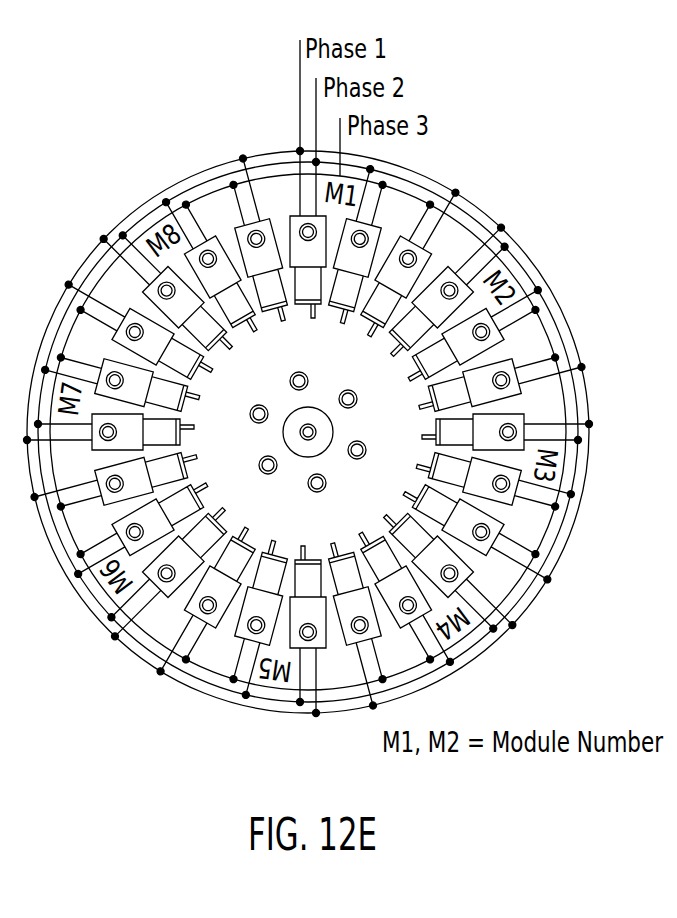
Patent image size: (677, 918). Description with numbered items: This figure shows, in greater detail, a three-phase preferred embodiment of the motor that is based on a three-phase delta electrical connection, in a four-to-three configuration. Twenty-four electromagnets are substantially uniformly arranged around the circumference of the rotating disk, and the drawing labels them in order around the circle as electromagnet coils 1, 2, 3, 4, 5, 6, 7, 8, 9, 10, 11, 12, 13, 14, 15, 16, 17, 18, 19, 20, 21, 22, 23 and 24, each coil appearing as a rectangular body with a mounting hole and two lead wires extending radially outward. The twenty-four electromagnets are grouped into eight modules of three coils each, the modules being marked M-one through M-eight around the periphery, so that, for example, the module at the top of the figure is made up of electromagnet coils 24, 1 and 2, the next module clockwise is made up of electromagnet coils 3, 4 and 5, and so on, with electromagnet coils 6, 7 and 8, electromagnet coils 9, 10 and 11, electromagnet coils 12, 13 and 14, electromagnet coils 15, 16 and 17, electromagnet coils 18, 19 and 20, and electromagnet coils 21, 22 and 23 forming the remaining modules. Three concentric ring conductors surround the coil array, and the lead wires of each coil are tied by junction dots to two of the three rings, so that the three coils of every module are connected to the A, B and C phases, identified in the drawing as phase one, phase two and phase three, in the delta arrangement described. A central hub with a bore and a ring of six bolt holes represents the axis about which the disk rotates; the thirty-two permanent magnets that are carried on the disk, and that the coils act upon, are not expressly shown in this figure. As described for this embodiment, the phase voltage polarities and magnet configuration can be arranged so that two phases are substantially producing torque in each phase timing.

The coil 1 (module M1, phase 2) 1 is at (308, 233).
The coil 2 (module M1, phase 3) 2 is at (358, 244).
The coil 3 (module M2) 3 is at (407, 260).
The coil 4 (module M2) 4 is at (449, 291).
The coil 5 (module M2) 5 is at (476, 335).
The coil 6 (module M3) 6 is at (500, 380).
The coil 7 (module M3) 7 is at (507, 432).
The coil 8 (module M3) 8 is at (494, 482).
The coil 9 (module M4) 9 is at (481, 531).
The coil 10 (module M4) 10 is at (449, 573).
The coil 11 (module M4) 11 is at (404, 600).
The coil 12 (module M5) 12 is at (359, 624).
The coil 13 (module M5) 13 is at (308, 631).
The coil 14 (module M5) 14 is at (258, 618).
The coil 15 (module M6) 15 is at (208, 605).
The coil 16 (module M6) 16 is at (167, 573).
The coil 17 (module M6) 17 is at (140, 528).
The coil 18 (module M7) 18 is at (116, 483).
The coil 19 (module M7) 19 is at (109, 432).
The coil 20 (module M7) 20 is at (120, 382).
The coil 21 (module M8) 21 is at (136, 332).
The coil 22 (module M8) 22 is at (167, 291).
The coil 23 (module M8) 23 is at (211, 264).
The coil 24 (module M1, phase 1) 24 is at (256, 240).